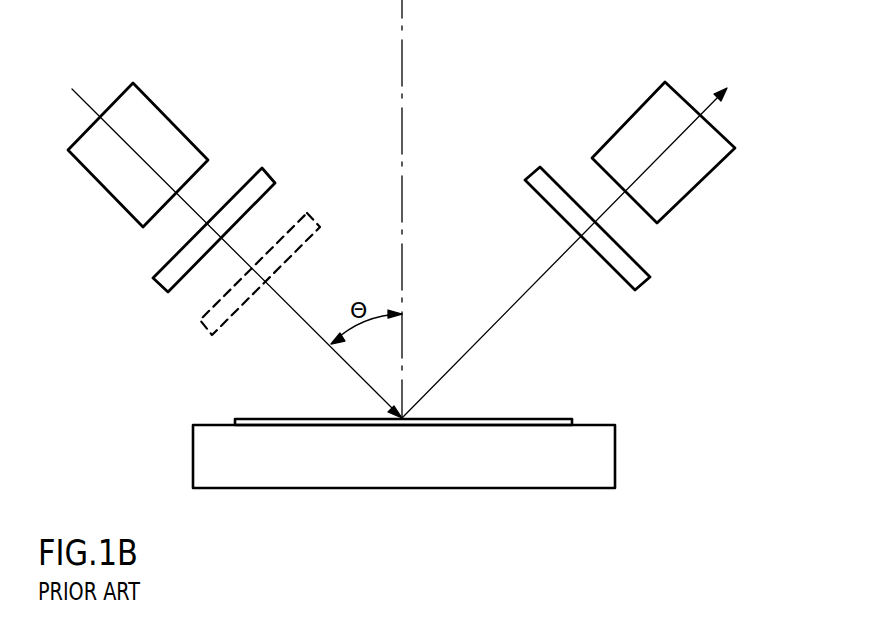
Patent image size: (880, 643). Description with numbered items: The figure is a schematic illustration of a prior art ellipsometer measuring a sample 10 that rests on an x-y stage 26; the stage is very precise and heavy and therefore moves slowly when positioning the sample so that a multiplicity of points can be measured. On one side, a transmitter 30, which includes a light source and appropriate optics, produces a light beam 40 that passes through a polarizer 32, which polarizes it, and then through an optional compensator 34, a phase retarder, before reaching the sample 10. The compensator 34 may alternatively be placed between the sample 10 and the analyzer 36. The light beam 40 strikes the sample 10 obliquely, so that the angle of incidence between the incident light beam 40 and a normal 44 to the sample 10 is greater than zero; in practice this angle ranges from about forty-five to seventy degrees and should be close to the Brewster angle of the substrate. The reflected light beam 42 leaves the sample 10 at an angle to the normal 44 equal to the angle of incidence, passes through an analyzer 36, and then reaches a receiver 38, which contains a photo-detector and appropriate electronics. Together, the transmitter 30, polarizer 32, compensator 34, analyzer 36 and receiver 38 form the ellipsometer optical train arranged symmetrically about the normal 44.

The sample 10 is at (533, 419).
The x-y stage 26 is at (600, 463).
The transmitter 30 is at (165, 122).
The polarizer 32 is at (243, 182).
The compensator 34 is at (322, 224).
The analyzer 36 is at (647, 282).
The receiver 38 is at (700, 180).
The light beam 40 is at (293, 310).
The reflected light beam 42 is at (492, 326).
The normal 44 is at (398, 73).